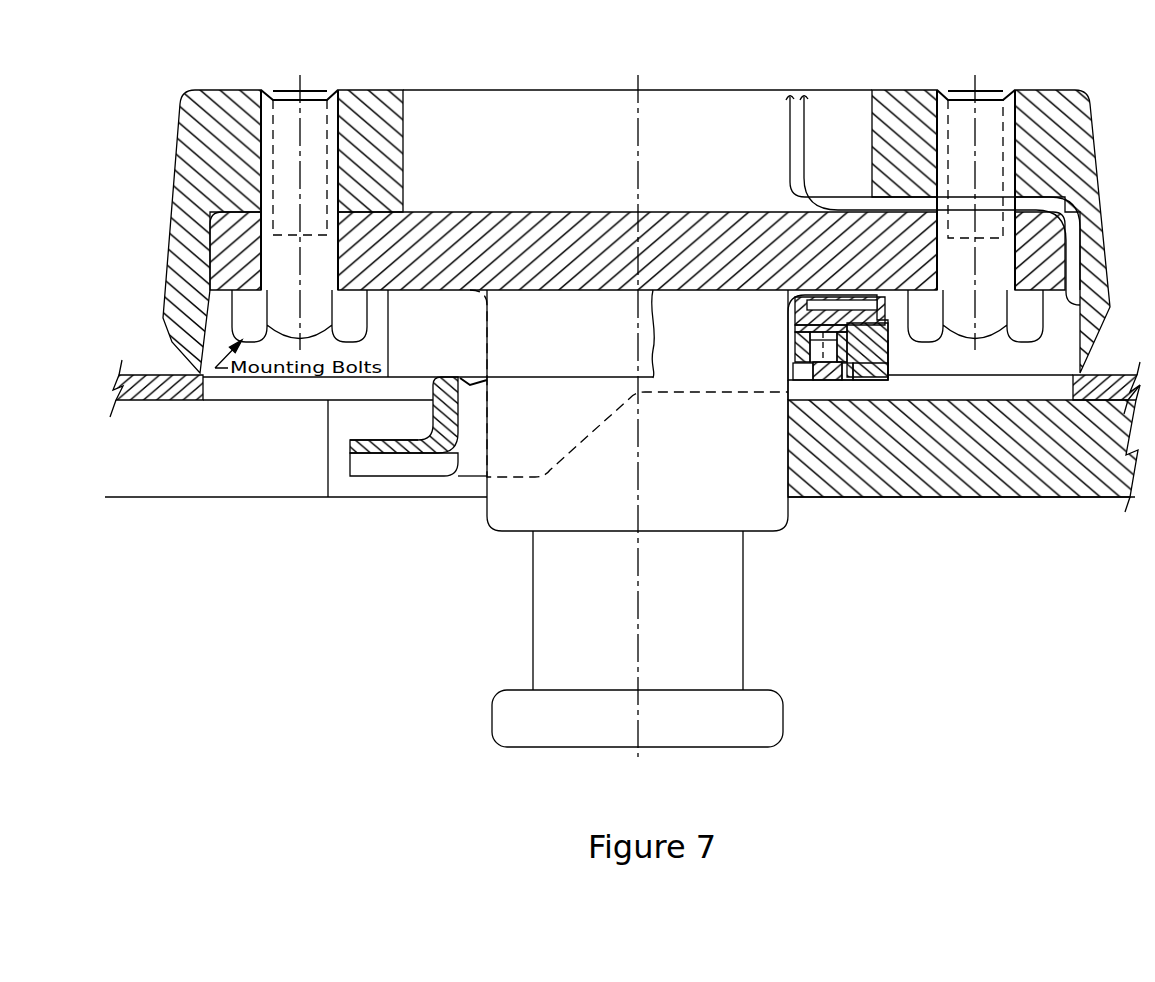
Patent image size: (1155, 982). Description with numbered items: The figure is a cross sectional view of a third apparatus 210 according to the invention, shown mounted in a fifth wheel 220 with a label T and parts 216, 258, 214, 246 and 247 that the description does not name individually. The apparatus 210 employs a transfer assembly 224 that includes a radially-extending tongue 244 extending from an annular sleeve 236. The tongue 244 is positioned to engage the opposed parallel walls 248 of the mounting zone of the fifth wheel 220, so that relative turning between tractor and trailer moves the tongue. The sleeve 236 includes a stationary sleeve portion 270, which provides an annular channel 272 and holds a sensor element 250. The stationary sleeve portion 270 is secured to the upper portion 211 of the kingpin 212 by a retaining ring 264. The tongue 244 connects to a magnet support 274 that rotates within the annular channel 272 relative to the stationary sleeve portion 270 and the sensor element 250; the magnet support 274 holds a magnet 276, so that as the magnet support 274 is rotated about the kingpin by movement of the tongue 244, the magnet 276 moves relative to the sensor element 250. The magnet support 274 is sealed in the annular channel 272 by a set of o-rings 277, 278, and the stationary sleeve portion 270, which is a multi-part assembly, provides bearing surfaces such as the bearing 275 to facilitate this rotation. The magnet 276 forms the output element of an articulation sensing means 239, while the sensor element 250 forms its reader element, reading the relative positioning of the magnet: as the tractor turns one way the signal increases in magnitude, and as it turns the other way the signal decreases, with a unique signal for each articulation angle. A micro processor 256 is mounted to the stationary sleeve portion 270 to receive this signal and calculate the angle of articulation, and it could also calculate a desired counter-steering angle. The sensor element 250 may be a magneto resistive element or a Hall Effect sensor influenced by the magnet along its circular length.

The third apparatus 210 is at (247, 85).
The top surface T is at (388, 90).
The mounting plate 216 is at (627, 213).
The lubricant tube 258 is at (793, 143).
The micro processor 256 is at (840, 307).
The sensor element 250 is at (792, 310).
The magnet 276 is at (812, 333).
The bearing 275 is at (805, 347).
The o-ring 277 is at (803, 375).
The stationary sleeve portion 270 is at (888, 346).
The annular channel 272 is at (887, 375).
The articulation sensing means 239 is at (898, 362).
The o-ring 278 is at (836, 340).
The magnet support 274 is at (825, 350).
The bed plate 214 is at (1017, 387).
The fifth wheel 220 is at (1045, 497).
The upper portion 211 is at (758, 488).
The kingpin 212 is at (780, 628).
The base line 246 is at (247, 537).
The lower surface 247 is at (238, 470).
The opposed parallel walls 248 is at (345, 482).
The tongue 244 is at (395, 465).
The transfer assembly 224 is at (425, 487).
The annular sleeve 236 is at (480, 382).
The retaining ring 264 is at (468, 382).